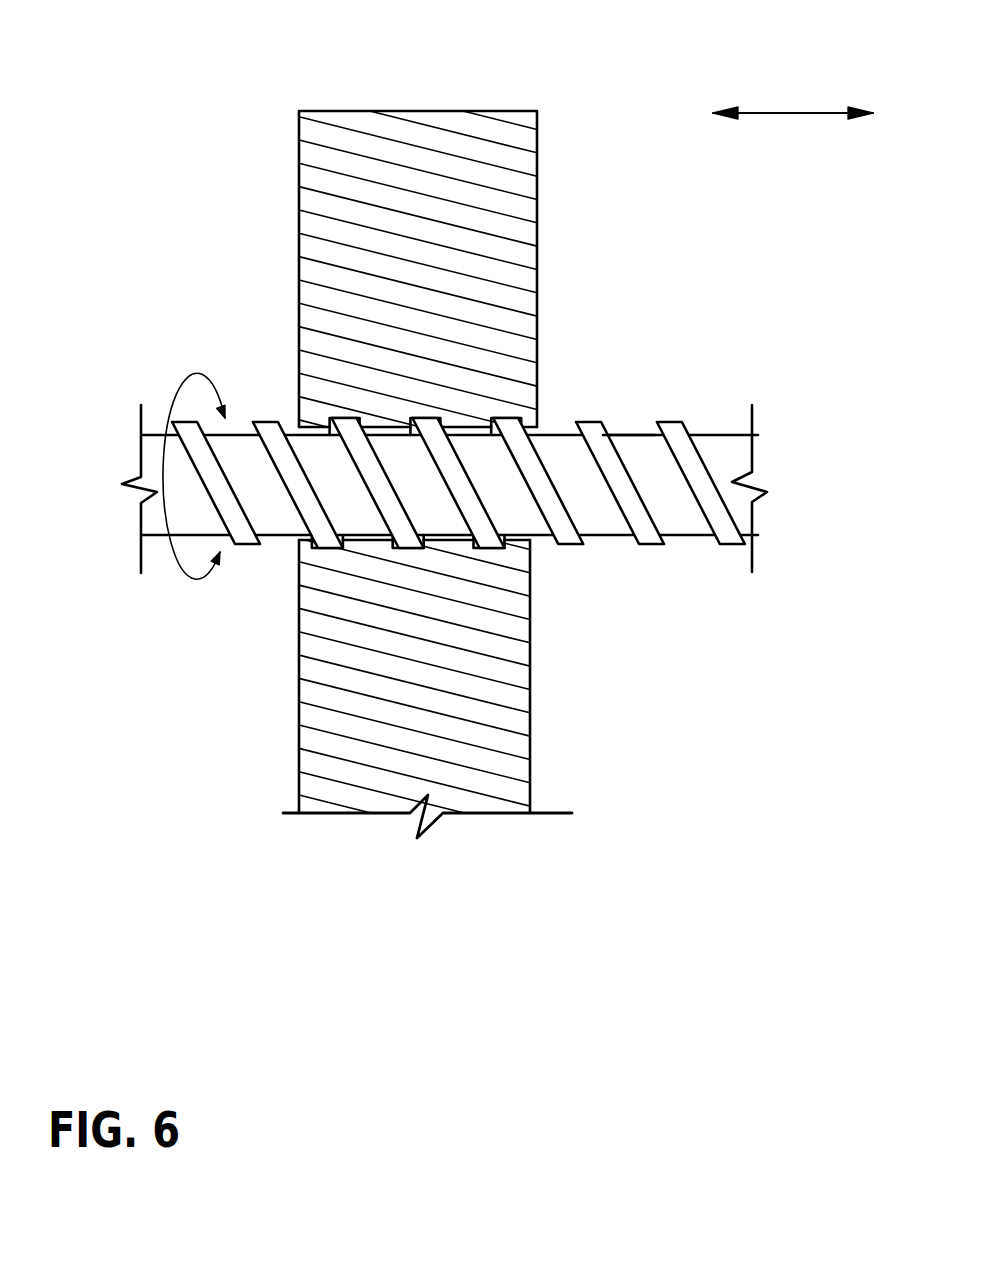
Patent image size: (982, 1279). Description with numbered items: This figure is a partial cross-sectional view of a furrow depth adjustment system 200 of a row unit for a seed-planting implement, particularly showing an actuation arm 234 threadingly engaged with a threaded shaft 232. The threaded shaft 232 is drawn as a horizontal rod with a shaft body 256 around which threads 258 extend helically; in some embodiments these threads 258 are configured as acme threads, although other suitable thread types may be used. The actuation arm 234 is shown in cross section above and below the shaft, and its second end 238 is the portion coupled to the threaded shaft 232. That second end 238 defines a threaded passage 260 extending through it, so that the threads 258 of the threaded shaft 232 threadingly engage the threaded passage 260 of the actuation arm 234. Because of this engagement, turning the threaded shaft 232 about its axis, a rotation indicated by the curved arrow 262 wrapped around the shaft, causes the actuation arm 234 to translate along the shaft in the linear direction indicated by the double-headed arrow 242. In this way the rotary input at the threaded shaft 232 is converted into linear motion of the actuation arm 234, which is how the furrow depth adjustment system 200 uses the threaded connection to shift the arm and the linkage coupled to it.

The linear actuator assembly 200 is at (472, 421).
The threaded shaft 232 is at (618, 545).
The actuation arm 234 is at (386, 421).
The second end 238 is at (423, 100).
The arrow 242 is at (780, 113).
The shaft body 256 is at (632, 435).
The threads 258 is at (588, 420).
The threaded passage 260 is at (288, 418).
The arrow 262 is at (194, 583).